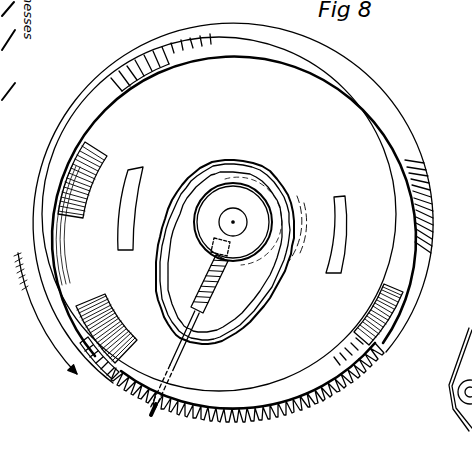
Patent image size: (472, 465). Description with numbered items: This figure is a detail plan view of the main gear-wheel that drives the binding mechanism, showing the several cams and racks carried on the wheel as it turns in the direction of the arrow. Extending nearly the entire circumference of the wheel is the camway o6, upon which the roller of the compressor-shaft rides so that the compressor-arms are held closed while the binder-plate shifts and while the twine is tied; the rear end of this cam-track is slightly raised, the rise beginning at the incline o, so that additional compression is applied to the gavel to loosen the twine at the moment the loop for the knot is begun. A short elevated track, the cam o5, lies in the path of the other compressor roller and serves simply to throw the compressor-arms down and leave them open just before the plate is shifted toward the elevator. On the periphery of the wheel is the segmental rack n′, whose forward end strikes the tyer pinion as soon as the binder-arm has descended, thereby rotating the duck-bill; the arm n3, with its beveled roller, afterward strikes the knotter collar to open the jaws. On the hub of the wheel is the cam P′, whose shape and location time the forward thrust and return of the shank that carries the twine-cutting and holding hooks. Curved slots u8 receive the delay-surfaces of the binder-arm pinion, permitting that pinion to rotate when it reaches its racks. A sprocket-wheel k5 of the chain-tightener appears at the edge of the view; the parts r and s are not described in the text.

The cam o5 is at (106, 152).
The camway o6 is at (234, 206).
The cam P′ is at (255, 183).
The arm n3 is at (427, 175).
The curved slots u8 is at (349, 230).
The incline o is at (376, 326).
The segmental rack n′ is at (138, 393).
The rack block r is at (92, 368).
The pawl rod s is at (185, 337).
The sprocket-wheel k5 is at (452, 391).